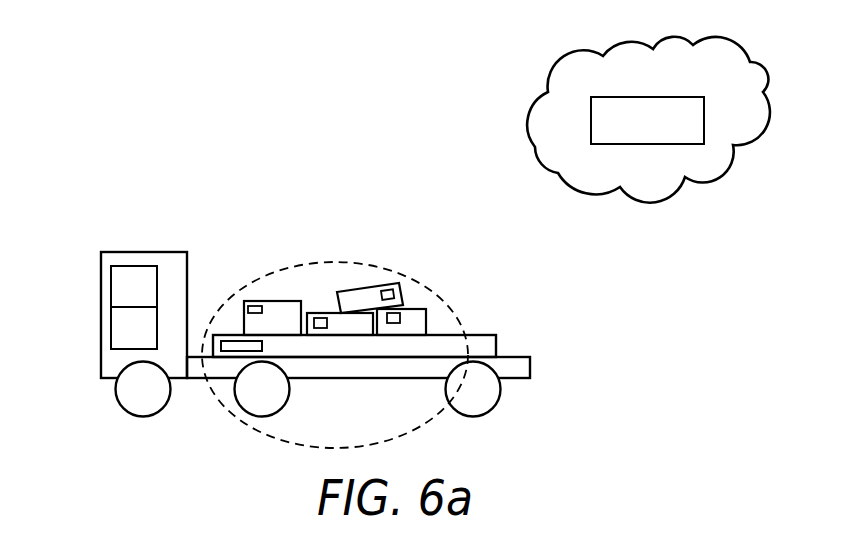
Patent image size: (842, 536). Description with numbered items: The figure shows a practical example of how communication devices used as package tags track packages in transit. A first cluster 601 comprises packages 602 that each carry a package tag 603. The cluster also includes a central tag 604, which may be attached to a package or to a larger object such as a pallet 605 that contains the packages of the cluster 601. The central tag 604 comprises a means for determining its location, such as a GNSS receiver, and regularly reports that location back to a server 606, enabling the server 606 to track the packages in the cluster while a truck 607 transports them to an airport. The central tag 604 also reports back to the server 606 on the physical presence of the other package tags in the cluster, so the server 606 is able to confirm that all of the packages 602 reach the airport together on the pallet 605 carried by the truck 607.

The first cluster 601 is at (432, 289).
The packages 602 is at (271, 300).
The package tag 603 is at (387, 287).
The central tag 604 is at (228, 352).
The pallet 605 is at (497, 345).
The server 606 is at (663, 202).
The truck 607 is at (107, 362).